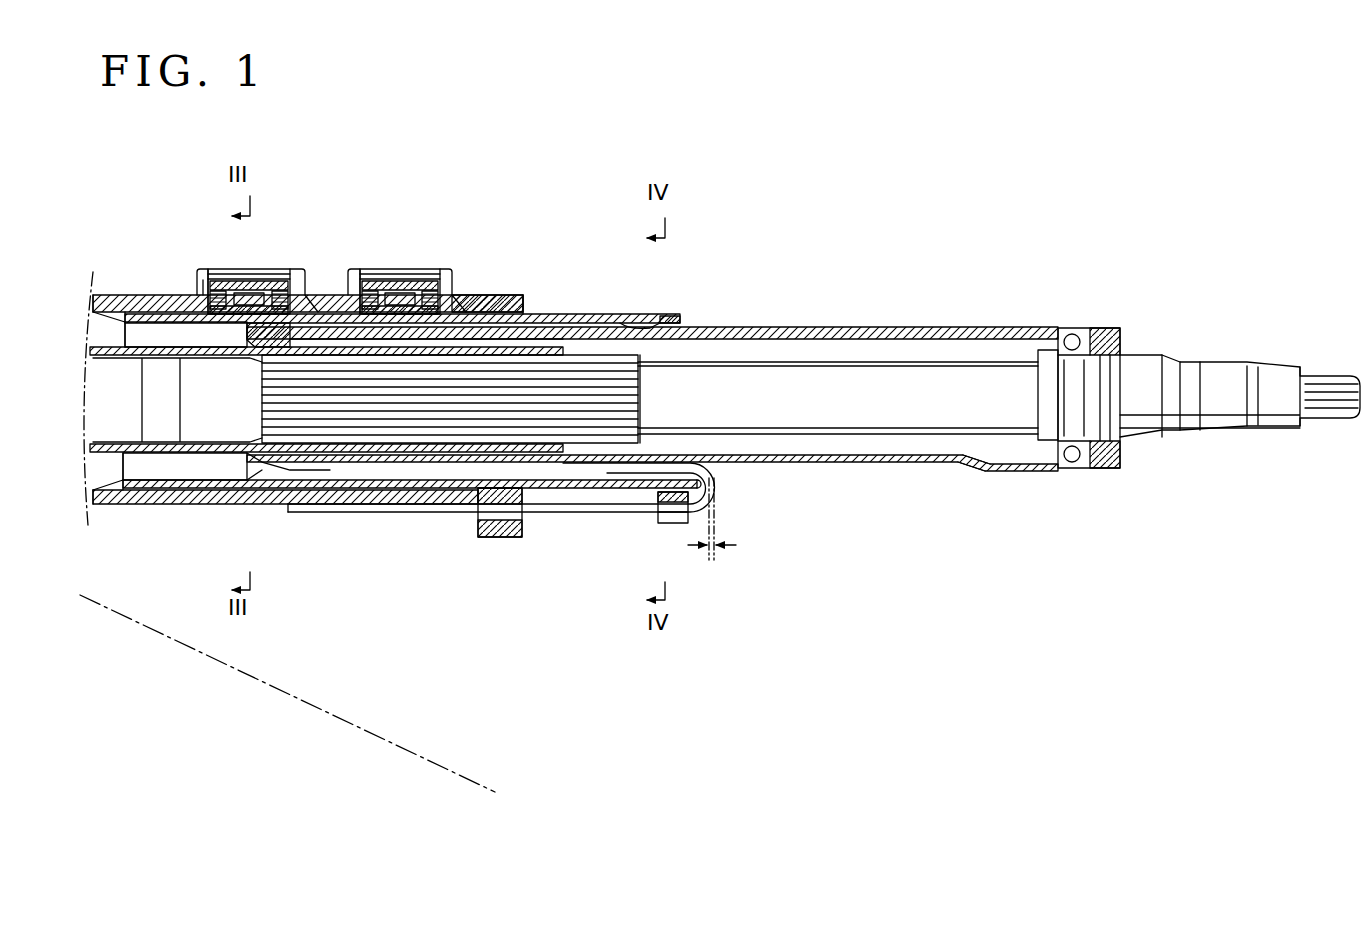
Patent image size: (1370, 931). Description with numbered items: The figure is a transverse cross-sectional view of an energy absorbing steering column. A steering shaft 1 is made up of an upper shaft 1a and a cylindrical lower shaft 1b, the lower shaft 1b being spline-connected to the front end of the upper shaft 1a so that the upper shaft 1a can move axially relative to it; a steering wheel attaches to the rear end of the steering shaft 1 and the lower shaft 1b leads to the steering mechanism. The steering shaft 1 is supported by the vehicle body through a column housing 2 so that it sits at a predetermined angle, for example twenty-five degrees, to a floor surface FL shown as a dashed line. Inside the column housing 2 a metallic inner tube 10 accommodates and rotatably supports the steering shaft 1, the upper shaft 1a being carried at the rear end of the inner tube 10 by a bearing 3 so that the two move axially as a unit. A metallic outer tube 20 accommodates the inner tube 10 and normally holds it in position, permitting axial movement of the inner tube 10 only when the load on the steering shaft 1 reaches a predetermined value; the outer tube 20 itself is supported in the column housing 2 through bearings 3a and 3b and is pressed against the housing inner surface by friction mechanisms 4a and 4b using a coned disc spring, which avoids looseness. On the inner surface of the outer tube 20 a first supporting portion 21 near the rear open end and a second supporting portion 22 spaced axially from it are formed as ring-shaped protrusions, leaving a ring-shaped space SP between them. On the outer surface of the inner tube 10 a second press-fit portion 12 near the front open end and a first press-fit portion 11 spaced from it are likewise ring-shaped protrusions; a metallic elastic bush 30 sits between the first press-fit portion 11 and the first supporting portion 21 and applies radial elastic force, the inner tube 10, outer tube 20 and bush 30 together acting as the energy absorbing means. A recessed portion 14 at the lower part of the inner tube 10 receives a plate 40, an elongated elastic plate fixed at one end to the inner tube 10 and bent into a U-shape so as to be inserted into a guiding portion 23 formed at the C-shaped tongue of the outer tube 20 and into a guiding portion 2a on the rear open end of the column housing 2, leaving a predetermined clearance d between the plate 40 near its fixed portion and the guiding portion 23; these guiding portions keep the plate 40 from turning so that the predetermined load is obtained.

The steering shaft 1 is at (1230, 355).
The upper shaft 1a is at (868, 420).
The lower shaft 1b is at (118, 492).
The column housing 2 is at (143, 295).
The guiding portion 2a is at (498, 522).
The bearing 3 is at (1072, 333).
The bearing 3a is at (498, 296).
The bearing 3b is at (188, 312).
The friction mechanism 4a is at (412, 285).
The friction mechanism 4b is at (236, 282).
The inner tube 10 is at (965, 325).
The first press-fit portion 11 is at (628, 325).
The second press-fit portion 12 is at (265, 472).
The recessed portion 14 is at (942, 465).
The outer tube 20 is at (583, 318).
The first supporting portion 21 is at (648, 314).
The second supporting portion 22 is at (296, 325).
The guiding portion 23 is at (668, 525).
The metallic elastic bush 30 is at (684, 317).
The plate 40 is at (716, 492).
The ring-shaped space SP is at (338, 330).
The floor surface FL is at (302, 704).
The clearance d is at (712, 534).